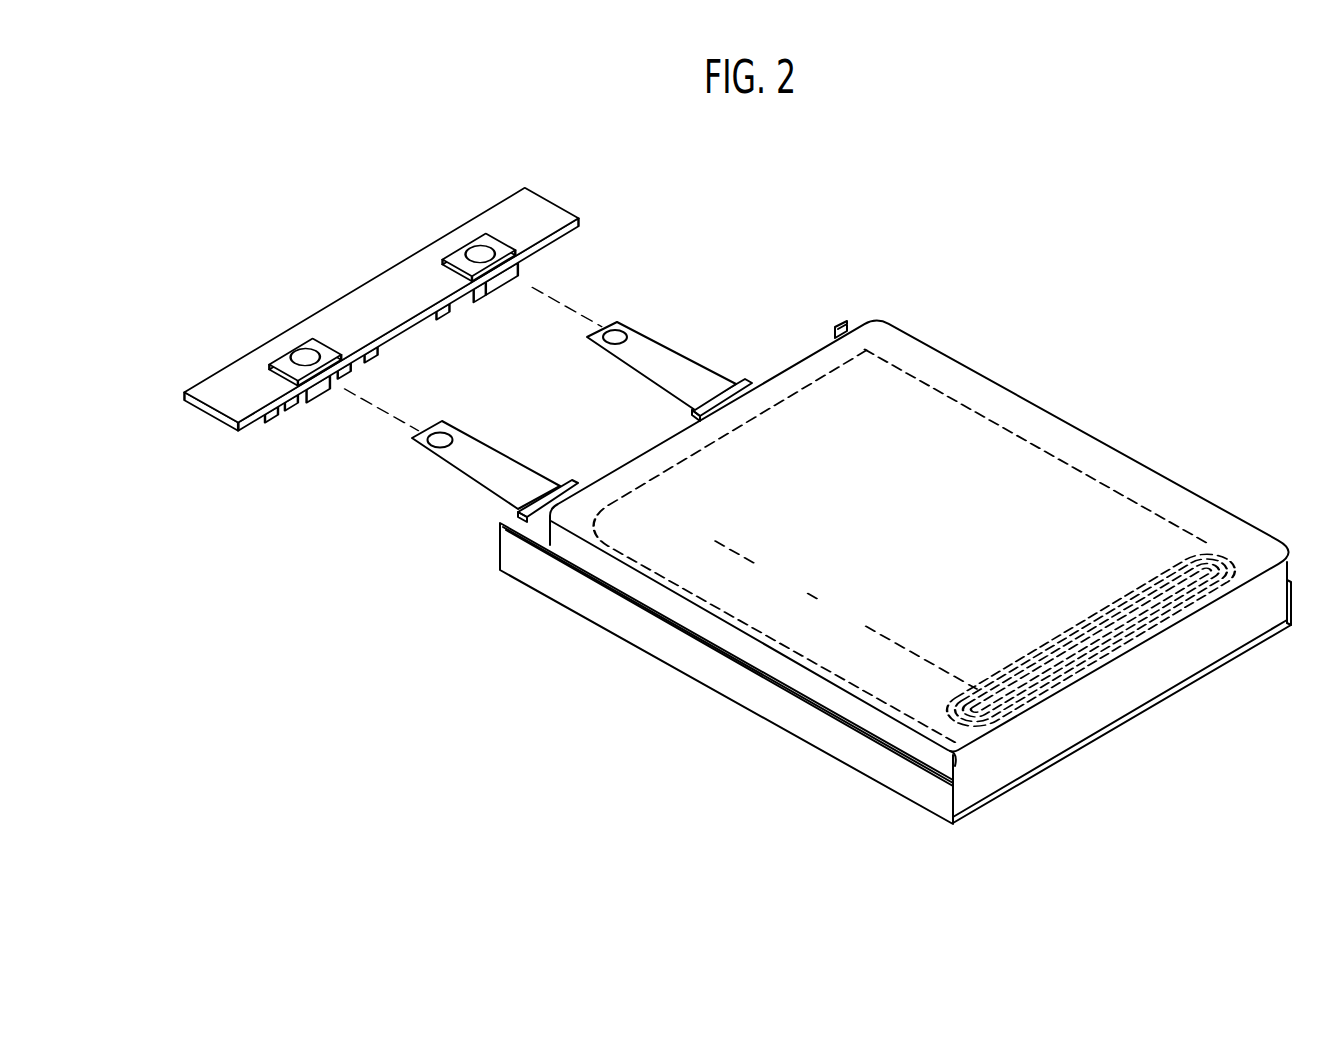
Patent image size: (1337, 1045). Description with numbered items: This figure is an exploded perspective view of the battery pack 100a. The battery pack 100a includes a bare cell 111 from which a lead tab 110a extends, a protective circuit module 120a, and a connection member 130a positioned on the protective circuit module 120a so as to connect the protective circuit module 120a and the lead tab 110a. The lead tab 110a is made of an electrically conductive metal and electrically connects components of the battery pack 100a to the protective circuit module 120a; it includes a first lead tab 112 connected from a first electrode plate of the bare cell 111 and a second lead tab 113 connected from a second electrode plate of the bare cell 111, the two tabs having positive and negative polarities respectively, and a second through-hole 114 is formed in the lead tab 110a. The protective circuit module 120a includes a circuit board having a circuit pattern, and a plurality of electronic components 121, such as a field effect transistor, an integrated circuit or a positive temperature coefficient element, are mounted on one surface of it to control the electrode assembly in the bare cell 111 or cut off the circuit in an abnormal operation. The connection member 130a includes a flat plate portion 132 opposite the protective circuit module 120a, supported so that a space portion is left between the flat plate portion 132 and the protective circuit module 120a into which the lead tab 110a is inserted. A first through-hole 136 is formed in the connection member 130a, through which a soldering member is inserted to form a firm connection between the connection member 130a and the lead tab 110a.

The battery pack 100a is at (1062, 150).
The lead tab 110a is at (568, 365).
The bare cell 111 is at (1015, 366).
The first lead tab 112 is at (500, 458).
The second lead tab 113 is at (630, 372).
The second through-hole 114 is at (613, 337).
The protective circuit module 120a is at (362, 297).
The electronic components 121 is at (272, 424).
The connection member 130a is at (507, 226).
The flat plate portion 132 is at (474, 238).
The first through-hole 136 is at (307, 347).